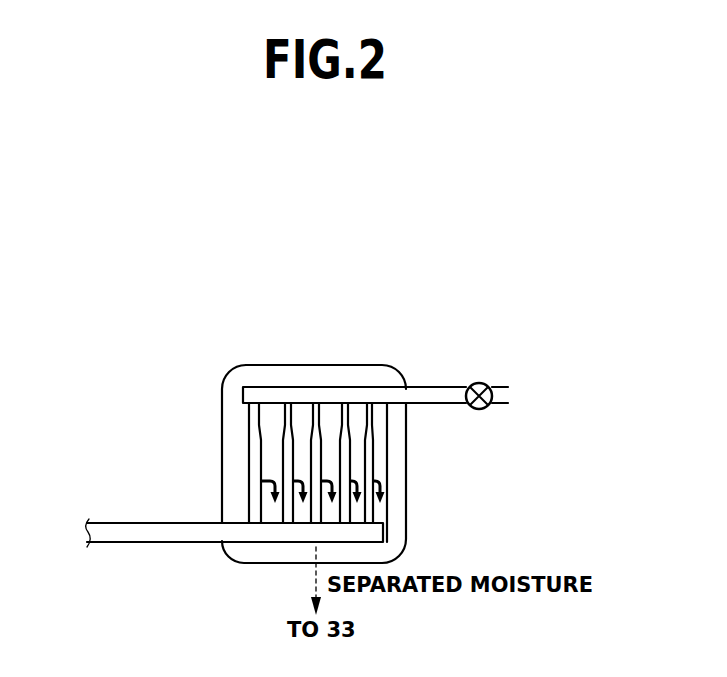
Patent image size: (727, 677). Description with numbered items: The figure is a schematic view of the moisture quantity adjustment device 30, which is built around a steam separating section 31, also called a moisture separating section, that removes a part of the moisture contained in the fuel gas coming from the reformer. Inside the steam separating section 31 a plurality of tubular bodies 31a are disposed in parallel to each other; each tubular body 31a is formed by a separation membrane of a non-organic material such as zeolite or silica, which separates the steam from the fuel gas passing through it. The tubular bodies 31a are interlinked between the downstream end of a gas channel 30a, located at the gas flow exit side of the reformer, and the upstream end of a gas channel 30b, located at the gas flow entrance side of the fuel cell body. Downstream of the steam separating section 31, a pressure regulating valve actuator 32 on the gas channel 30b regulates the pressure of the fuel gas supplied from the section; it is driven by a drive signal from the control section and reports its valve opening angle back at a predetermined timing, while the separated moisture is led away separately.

The moisture quantity adjustment device 30 is at (175, 337).
The steam separating section 31 is at (237, 368).
The tubular bodies 31a is at (342, 432).
The gas channel 30b is at (430, 387).
The pressure regulating valve actuator 32 is at (486, 383).
The gas channel 30a is at (132, 543).